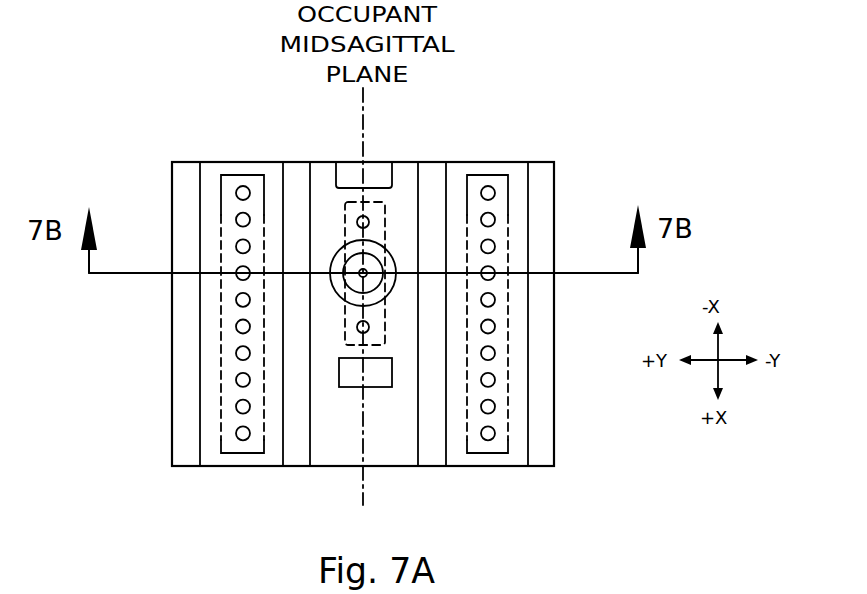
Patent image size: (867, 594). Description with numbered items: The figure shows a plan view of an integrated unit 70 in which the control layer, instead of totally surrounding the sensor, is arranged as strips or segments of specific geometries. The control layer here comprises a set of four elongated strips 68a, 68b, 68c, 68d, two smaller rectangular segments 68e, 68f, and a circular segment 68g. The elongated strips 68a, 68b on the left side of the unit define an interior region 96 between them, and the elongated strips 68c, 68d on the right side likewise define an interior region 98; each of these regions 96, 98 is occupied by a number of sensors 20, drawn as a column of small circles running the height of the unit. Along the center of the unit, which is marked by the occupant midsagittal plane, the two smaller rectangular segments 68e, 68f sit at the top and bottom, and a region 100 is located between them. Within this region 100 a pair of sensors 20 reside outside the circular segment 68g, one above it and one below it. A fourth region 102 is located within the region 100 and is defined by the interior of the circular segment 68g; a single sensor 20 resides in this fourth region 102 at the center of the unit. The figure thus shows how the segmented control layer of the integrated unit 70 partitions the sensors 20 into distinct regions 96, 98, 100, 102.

The integrated unit 70 is at (287, 291).
The elongated strip 68a is at (183, 162).
The elongated strip 68b is at (295, 175).
The elongated strip 68c is at (432, 175).
The elongated strip 68d is at (542, 162).
The rectangular segment 68e is at (350, 160).
The rectangular segment 68f is at (352, 431).
The circular segment 68g is at (395, 293).
The sensors 20 is at (357, 217).
The interior region 96 is at (240, 453).
The interior region 98 is at (488, 453).
The region 100 is at (355, 328).
The fourth region 102 is at (373, 290).